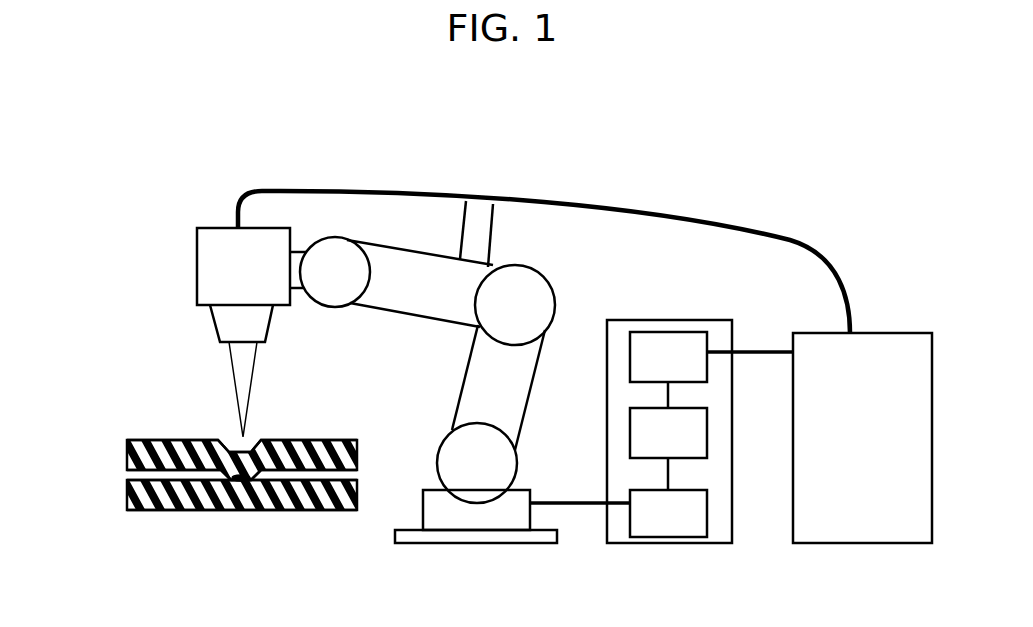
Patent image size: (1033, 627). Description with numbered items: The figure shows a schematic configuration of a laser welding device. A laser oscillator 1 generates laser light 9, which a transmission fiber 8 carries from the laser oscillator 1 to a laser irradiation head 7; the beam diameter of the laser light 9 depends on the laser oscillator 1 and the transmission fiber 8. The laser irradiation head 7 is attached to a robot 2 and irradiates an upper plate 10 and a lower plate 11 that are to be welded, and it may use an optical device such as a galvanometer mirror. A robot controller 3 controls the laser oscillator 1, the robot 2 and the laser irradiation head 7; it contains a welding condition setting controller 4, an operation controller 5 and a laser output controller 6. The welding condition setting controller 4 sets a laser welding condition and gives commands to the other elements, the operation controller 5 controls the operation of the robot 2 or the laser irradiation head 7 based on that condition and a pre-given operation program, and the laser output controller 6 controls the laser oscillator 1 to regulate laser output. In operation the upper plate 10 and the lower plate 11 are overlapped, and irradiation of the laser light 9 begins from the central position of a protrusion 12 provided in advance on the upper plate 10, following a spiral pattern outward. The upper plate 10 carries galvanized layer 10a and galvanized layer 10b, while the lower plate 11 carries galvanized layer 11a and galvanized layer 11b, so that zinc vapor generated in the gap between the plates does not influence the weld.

The laser oscillator 1 is at (857, 503).
The robot 2 is at (477, 465).
The robot controller 3 is at (622, 528).
The welding condition setting controller 4 is at (683, 503).
The operation controller 5 is at (677, 427).
The laser output controller 6 is at (668, 343).
The laser irradiation head 7 is at (228, 267).
The transmission fiber 8 is at (347, 187).
The laser light 9 is at (237, 367).
The upper plate 10 is at (292, 452).
The galvanized layer 10a is at (182, 442).
The galvanized layer 10b is at (128, 462).
The lower plate 11 is at (320, 492).
The galvanized layer 11a is at (133, 486).
The galvanized layer 11b is at (155, 508).
The protrusion 12 is at (242, 478).